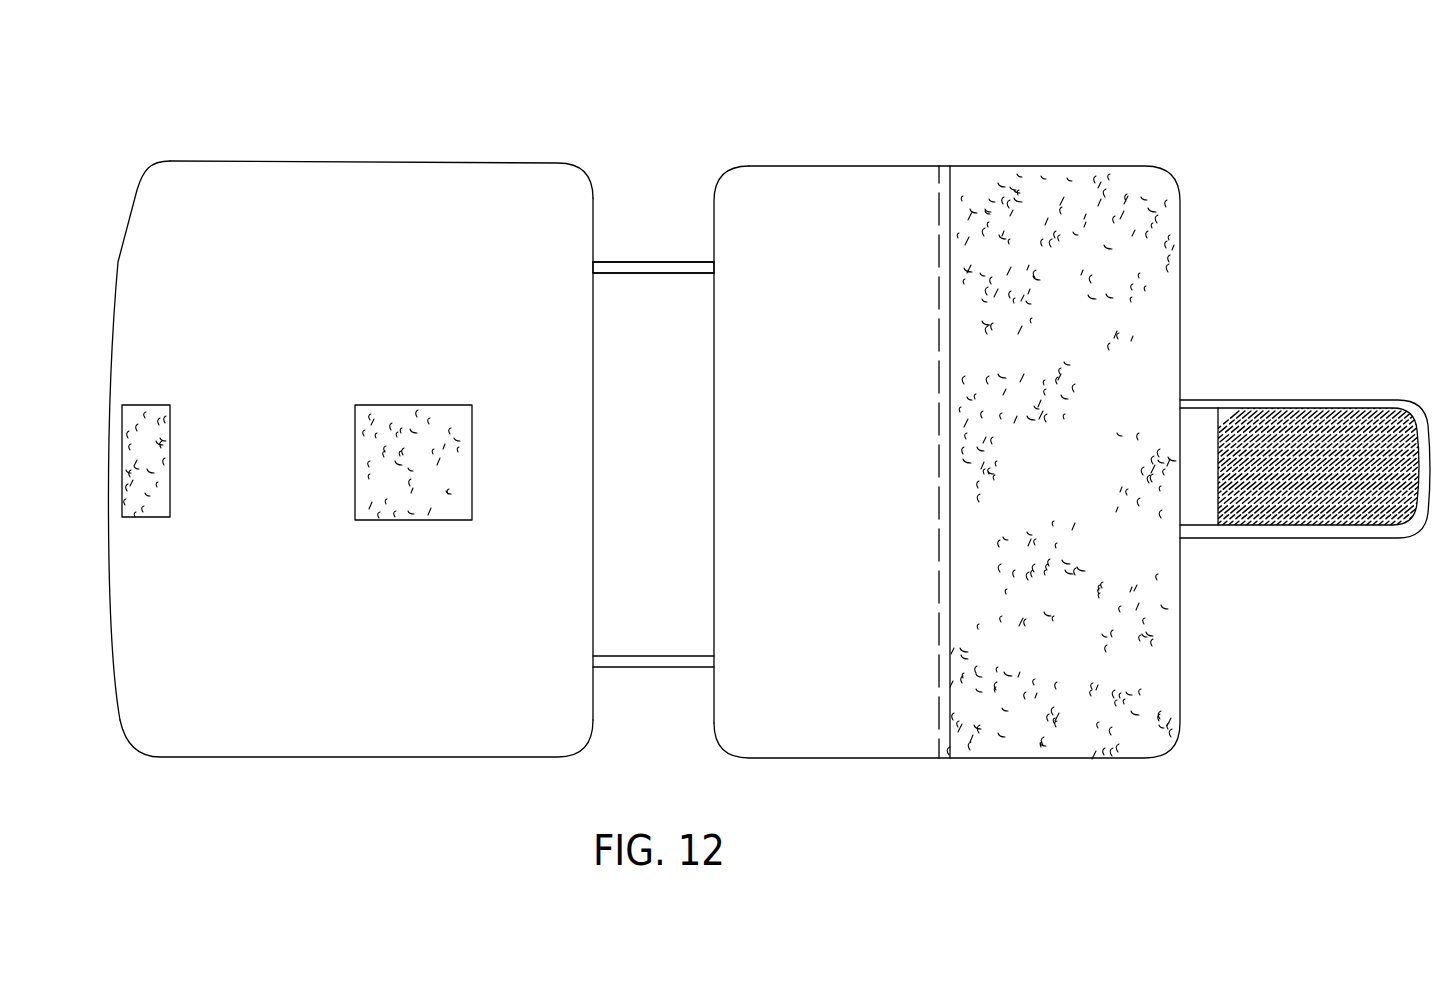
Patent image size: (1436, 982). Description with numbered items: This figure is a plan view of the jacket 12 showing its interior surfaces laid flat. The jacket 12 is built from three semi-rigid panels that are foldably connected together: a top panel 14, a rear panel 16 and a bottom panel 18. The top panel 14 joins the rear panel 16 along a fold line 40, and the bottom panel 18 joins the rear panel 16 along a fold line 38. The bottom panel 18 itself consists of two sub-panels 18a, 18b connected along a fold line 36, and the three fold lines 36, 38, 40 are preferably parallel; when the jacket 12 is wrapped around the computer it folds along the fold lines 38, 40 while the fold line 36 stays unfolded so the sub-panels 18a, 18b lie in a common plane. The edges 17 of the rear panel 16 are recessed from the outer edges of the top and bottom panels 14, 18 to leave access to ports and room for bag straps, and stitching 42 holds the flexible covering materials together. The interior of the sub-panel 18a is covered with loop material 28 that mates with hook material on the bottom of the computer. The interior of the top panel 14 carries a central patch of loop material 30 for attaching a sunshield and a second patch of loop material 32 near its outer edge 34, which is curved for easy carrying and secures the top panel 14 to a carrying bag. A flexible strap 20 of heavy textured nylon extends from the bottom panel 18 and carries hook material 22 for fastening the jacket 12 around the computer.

The jacket 12 is at (582, 110).
The top panel 14 is at (342, 177).
The rear panel 16 is at (636, 284).
The edges of rear panel 17 is at (680, 262).
The bottom panel 18 is at (891, 166).
The sub-panel 18a is at (1068, 190).
The sub-panel 18b is at (789, 182).
The strap 20 is at (1378, 400).
The hook material 22 is at (1289, 425).
The loop material 28 is at (1150, 237).
The patch of loop material 30 is at (437, 412).
The patch of loop material 32 is at (157, 406).
The outer edge 34 is at (118, 263).
The fold line 36 is at (937, 572).
The fold line 38 is at (716, 460).
The fold line 40 is at (592, 522).
The stitching 42 is at (696, 275).